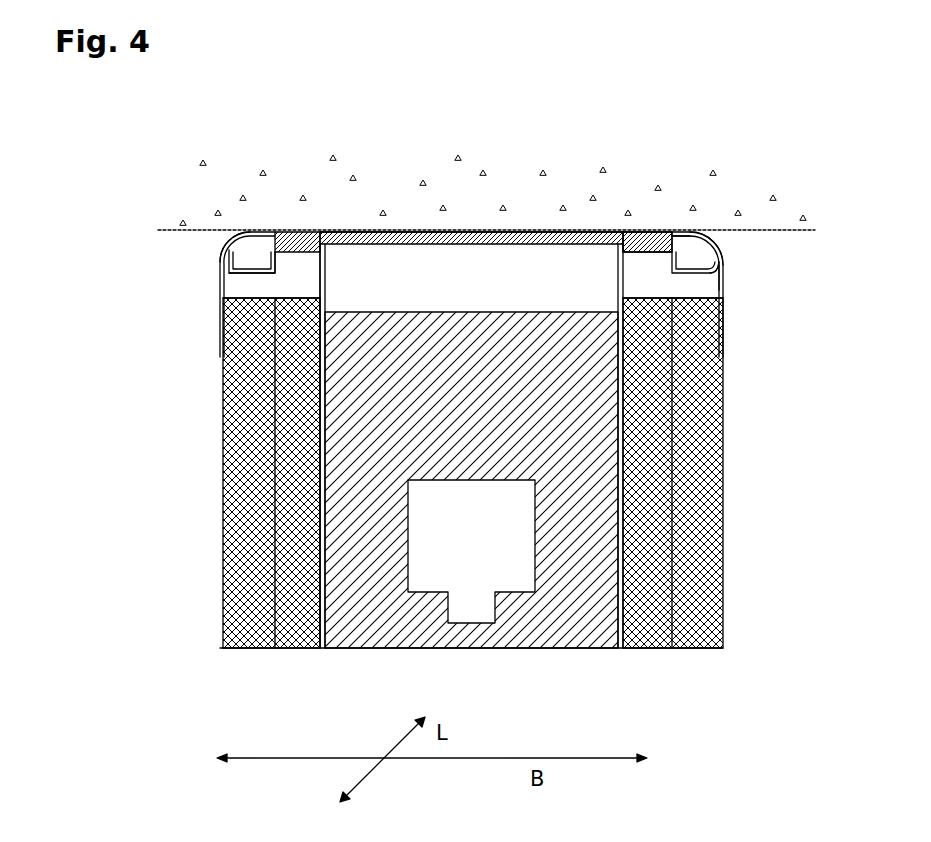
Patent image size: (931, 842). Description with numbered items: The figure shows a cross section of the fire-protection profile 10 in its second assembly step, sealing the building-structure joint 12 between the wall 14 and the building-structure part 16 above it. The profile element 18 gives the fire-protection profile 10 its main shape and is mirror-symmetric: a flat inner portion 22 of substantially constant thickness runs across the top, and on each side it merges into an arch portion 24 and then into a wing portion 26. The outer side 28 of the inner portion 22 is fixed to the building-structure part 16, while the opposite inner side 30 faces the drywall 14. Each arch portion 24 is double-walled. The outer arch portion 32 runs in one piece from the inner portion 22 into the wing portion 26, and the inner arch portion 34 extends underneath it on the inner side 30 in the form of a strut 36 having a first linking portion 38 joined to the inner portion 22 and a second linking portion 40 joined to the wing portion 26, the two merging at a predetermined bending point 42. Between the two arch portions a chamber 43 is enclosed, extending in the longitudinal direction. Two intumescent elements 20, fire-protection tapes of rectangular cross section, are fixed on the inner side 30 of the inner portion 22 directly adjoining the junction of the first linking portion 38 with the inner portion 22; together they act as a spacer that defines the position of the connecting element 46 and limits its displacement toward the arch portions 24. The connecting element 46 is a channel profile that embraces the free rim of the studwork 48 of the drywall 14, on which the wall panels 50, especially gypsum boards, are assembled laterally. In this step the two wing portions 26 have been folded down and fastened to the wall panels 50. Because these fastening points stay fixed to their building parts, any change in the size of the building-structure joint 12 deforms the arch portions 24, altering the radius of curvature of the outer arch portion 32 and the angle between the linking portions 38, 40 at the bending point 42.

The fire-protection profile 10 is at (582, 141).
The building-structure joint 12 is at (470, 236).
The wall 14 is at (223, 509).
The building-structure part 16 is at (305, 183).
The profile element 18 is at (260, 227).
The intumescent element 20 is at (282, 240).
The inner portion 22 is at (513, 240).
The arch portion 24 is at (223, 244).
The wing portion 26 is at (218, 300).
The outer side 28 is at (423, 231).
The inner side 30 is at (471, 468).
The outer arch portion 32 is at (706, 238).
The inner arch portion 34 is at (191, 261).
The strut 36 is at (243, 268).
The first linking portion 38 is at (668, 240).
The second linking portion 40 is at (702, 283).
The predetermined bending point 42 is at (706, 268).
The chamber 43 is at (722, 252).
The connecting element 46 is at (345, 240).
The studwork 48 is at (335, 430).
The wall panel 50 is at (240, 465).